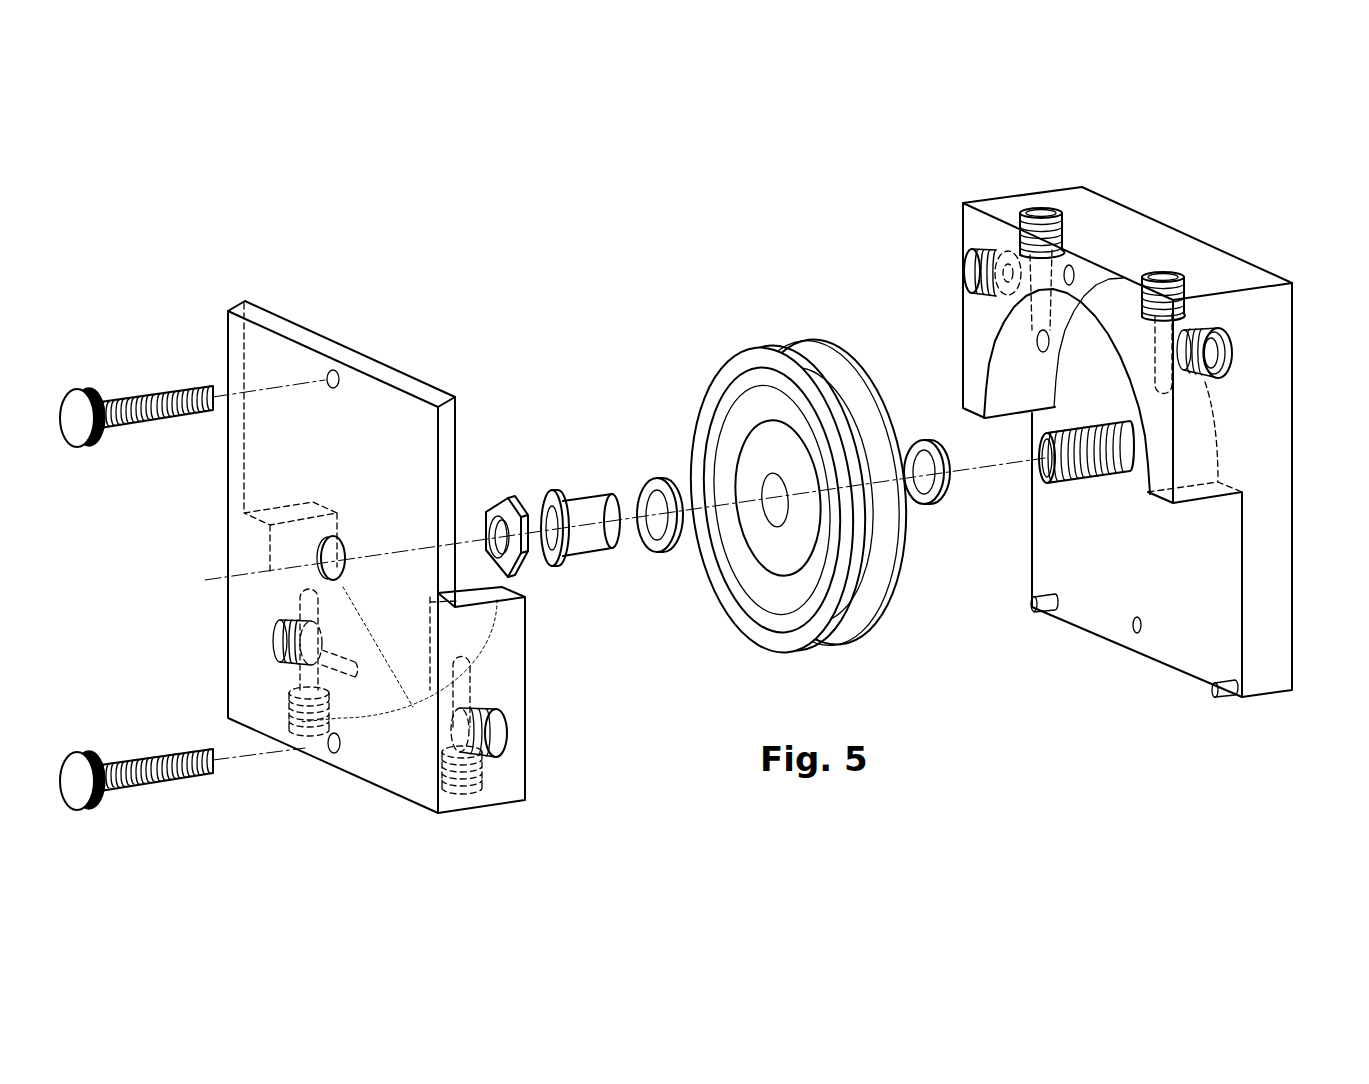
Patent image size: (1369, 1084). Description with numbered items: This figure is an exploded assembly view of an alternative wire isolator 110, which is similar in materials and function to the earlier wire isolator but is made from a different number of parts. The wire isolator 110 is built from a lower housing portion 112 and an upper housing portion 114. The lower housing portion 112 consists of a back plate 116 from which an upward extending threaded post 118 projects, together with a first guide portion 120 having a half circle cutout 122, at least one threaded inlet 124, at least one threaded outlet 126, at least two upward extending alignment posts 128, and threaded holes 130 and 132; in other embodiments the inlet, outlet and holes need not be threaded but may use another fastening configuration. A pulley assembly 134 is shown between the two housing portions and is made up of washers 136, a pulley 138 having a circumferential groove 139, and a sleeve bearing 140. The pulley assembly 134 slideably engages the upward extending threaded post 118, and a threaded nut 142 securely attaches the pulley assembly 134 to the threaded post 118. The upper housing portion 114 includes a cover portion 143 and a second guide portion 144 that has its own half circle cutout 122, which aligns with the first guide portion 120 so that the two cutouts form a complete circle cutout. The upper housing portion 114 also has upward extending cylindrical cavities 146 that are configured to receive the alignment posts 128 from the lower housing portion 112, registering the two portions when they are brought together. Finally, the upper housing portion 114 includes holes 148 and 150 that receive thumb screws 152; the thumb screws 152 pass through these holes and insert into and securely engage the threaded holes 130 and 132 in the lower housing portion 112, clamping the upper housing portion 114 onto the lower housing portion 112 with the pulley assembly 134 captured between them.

The wire isolator 110 is at (250, 158).
The lower housing portion 112 is at (928, 208).
The upper housing portion 114 is at (200, 303).
The back plate 116 is at (1263, 447).
The threaded post 118 is at (1072, 482).
The first guide portion 120 is at (975, 358).
The half circle cutout 122 is at (363, 650).
The threaded inlet 124 is at (1226, 353).
The threaded outlet 126 is at (1175, 277).
The alignment posts 128 is at (1033, 608).
The threaded hole 130 is at (1133, 632).
The threaded hole 132 is at (1071, 268).
The pulley assembly 134 is at (690, 350).
The washers 136 is at (650, 480).
The pulley 138 is at (750, 640).
The circumferential groove 139 is at (770, 505).
The sleeve bearing 140 is at (588, 505).
The threaded nut 142 is at (492, 505).
The cover portion 143 is at (300, 350).
The second guide portion 144 is at (278, 500).
The cylindrical cavities 146 is at (352, 705).
The hole 148 is at (333, 755).
The hole 150 is at (336, 392).
The thumb screws 152 is at (122, 400).